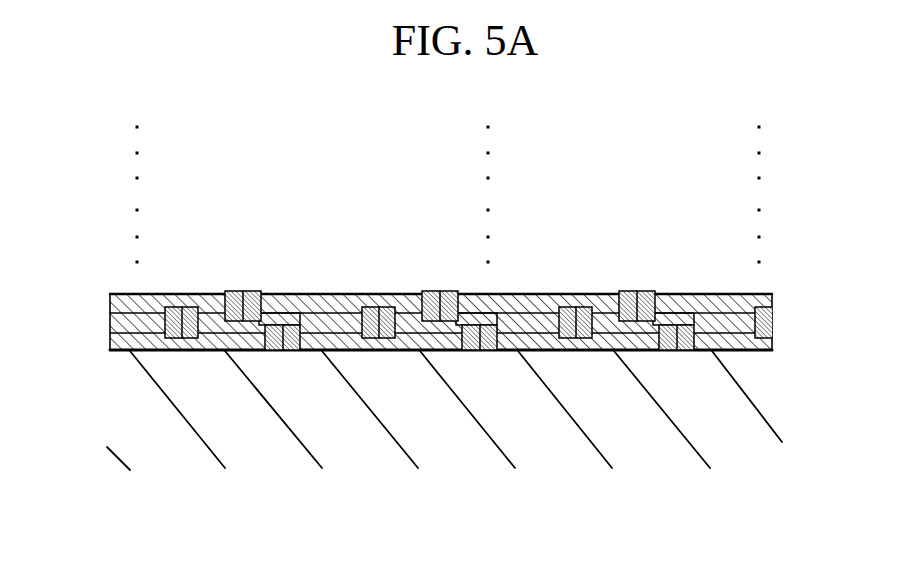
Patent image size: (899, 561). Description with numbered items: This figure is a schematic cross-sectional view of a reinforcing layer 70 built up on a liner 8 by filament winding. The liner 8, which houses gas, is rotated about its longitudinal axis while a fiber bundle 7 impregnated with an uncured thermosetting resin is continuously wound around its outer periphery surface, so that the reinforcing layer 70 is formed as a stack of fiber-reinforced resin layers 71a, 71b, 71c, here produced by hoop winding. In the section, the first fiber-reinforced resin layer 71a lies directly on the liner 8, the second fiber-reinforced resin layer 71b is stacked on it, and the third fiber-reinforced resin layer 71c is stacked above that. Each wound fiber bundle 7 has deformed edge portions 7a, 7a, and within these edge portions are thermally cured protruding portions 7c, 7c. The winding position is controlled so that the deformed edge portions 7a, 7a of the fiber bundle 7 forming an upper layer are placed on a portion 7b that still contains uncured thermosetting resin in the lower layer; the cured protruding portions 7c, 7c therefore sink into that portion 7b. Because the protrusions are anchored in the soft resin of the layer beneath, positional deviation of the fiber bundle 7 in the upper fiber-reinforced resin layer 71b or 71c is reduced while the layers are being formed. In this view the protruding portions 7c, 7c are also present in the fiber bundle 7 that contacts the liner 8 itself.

The reinforcing layer 70 is at (790, 125).
The fiber-reinforced resin layer 71a is at (112, 341).
The fiber-reinforced resin layer 71b is at (110, 326).
The fiber-reinforced resin layer 71c is at (110, 304).
The fiber bundle 7 is at (463, 353).
The deformed edge portion 7a is at (185, 306).
The portion including uncured thermosetting resin 7b is at (312, 318).
The protruding portion 7c is at (173, 307).
The liner 8 is at (762, 395).